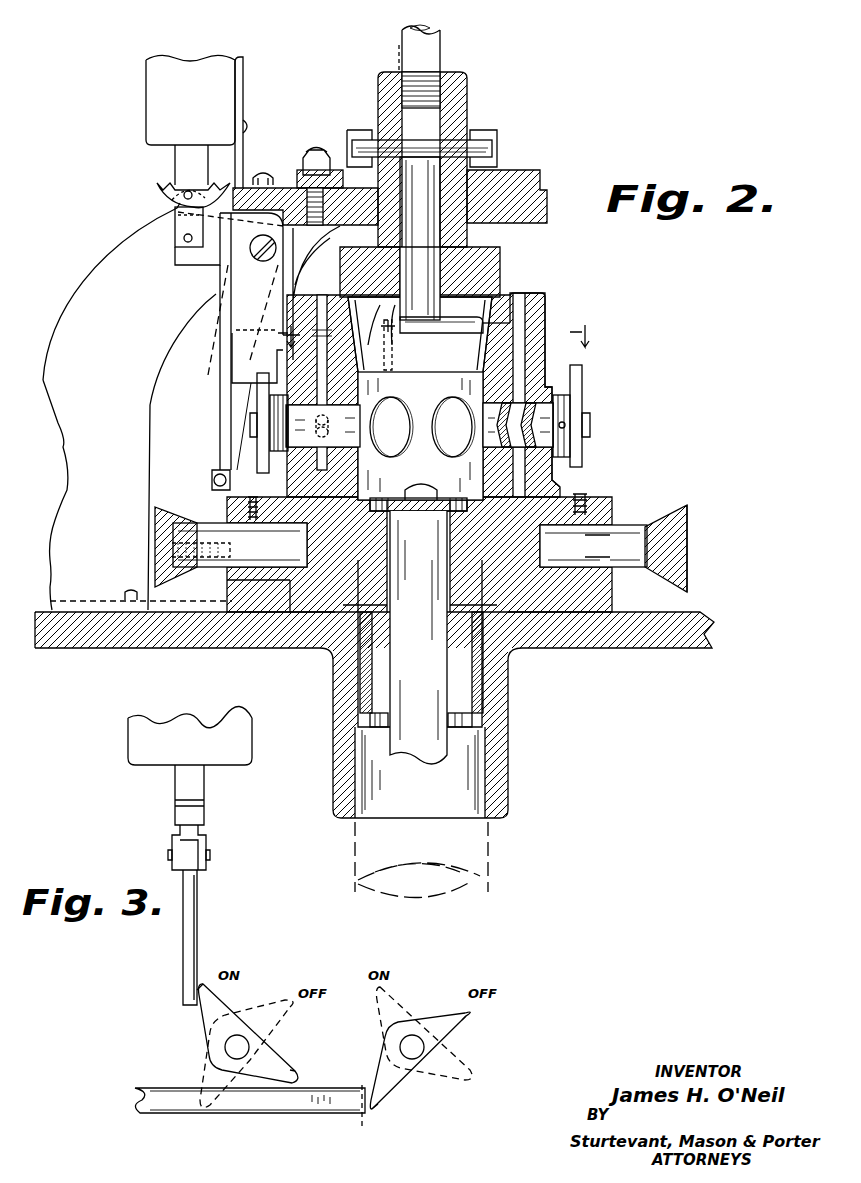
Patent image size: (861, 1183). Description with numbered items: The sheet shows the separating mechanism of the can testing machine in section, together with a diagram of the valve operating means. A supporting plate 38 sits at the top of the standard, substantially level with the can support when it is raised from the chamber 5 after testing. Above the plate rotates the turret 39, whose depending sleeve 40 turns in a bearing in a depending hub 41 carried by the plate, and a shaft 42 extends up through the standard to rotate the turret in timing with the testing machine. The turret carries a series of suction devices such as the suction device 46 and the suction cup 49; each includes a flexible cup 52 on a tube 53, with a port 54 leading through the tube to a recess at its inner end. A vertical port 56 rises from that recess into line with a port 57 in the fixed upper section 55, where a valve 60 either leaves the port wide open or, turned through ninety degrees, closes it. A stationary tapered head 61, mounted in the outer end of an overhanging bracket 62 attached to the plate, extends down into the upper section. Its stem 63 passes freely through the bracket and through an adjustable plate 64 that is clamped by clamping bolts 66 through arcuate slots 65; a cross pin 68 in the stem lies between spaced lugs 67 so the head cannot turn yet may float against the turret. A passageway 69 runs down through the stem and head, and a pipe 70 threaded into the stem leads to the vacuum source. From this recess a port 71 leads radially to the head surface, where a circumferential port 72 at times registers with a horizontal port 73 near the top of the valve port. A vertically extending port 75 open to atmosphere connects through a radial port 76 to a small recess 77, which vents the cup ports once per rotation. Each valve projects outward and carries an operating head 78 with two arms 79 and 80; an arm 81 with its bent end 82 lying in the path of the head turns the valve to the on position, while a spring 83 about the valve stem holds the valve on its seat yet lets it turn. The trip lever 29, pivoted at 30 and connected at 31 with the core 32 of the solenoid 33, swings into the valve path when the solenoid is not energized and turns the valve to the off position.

In FIG. 2, the chamber 5 is at (445, 338).
In FIG. 2, the trip lever 29 is at (252, 305).
In FIG. 3, the trip lever 29 is at (195, 918).
In FIG. 2, the pivot 30 is at (222, 268).
In FIG. 2, the connection 31 is at (186, 238).
In FIG. 3, the connection 31 is at (210, 857).
In FIG. 2, the core 32 is at (185, 160).
In FIG. 3, the core 32 is at (195, 785).
In FIG. 2, the solenoid 33 is at (150, 97).
In FIG. 3, the solenoid 33 is at (240, 746).
In FIG. 2, the supporting plate 38 is at (660, 642).
In FIG. 2, the turret 39 is at (485, 545).
In FIG. 2, the depending sleeve 40 is at (372, 672).
In FIG. 2, the depending hub 41 is at (505, 760).
In FIG. 2, the shaft 42 is at (402, 698).
In FIG. 2, the suction device 46 is at (709, 548).
In FIG. 2, the suction cup 49 is at (212, 484).
In FIG. 2, the flexible cup 52 is at (168, 520).
In FIG. 2, the tube 53 is at (222, 578).
In FIG. 2, the port 54 is at (200, 546).
In FIG. 2, the upper section 55 is at (538, 310).
In FIG. 2, the vertical port 56 is at (375, 512).
In FIG. 2, the port 57 is at (570, 478).
In FIG. 2, the valve 60 is at (306, 433).
In FIG. 2, the tapered head 61 is at (470, 283).
In FIG. 2, the overhanging bracket 62 is at (96, 310).
In FIG. 2, the stem 63 is at (462, 82).
In FIG. 2, the adjustable plate 64 is at (512, 177).
In FIG. 2, the arcuate slots 65 is at (300, 186).
In FIG. 2, the clamping bolt 66 is at (315, 158).
In FIG. 2, the lugs 67 is at (356, 135).
In FIG. 2, the cross pin 68 is at (360, 146).
In FIG. 2, the passageway 69 is at (415, 238).
In FIG. 2, the pipe 70 is at (400, 50).
In FIG. 2, the port 71 is at (512, 298).
In FIG. 2, the port 72 is at (505, 320).
In FIG. 2, the horizontal port 73 is at (542, 332).
In FIG. 2, the vertically extending port 75 is at (425, 336).
In FIG. 2, the radial port 76 is at (409, 329).
In FIG. 2, the recess 77 is at (330, 300).
In FIG. 2, the operating head 78 is at (258, 405).
In FIG. 3, the operating head 78 is at (214, 1040).
In FIG. 3, the arm 79 is at (290, 1072).
In FIG. 3, the arm 80 is at (200, 990).
In FIG. 3, the arm 81 is at (240, 1105).
In FIG. 3, the end 82 is at (364, 1117).
In FIG. 2, the spring 83 is at (270, 425).